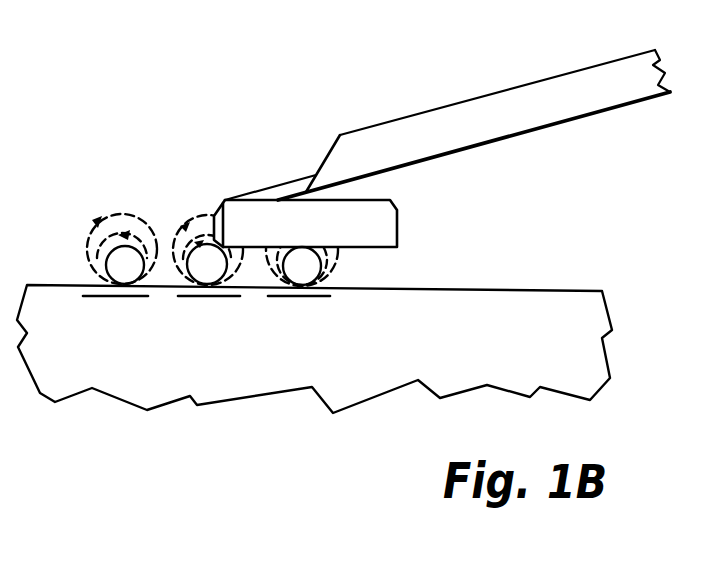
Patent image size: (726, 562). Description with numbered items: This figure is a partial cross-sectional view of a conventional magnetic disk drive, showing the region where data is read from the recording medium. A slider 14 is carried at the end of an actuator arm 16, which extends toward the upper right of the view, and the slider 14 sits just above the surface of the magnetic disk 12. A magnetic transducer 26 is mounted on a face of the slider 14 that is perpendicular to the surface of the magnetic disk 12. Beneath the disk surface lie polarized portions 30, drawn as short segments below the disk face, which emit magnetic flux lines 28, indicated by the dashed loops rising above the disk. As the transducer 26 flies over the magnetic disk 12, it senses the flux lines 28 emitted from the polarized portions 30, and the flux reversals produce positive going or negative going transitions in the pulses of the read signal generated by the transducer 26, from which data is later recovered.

The magnetic disk 12 is at (573, 289).
The slider 14 is at (373, 248).
The actuator arm 16 is at (497, 106).
The magnetic transducer 26 is at (222, 204).
The magnetic flux lines 28 is at (115, 213).
The polarized portions 30 is at (114, 297).